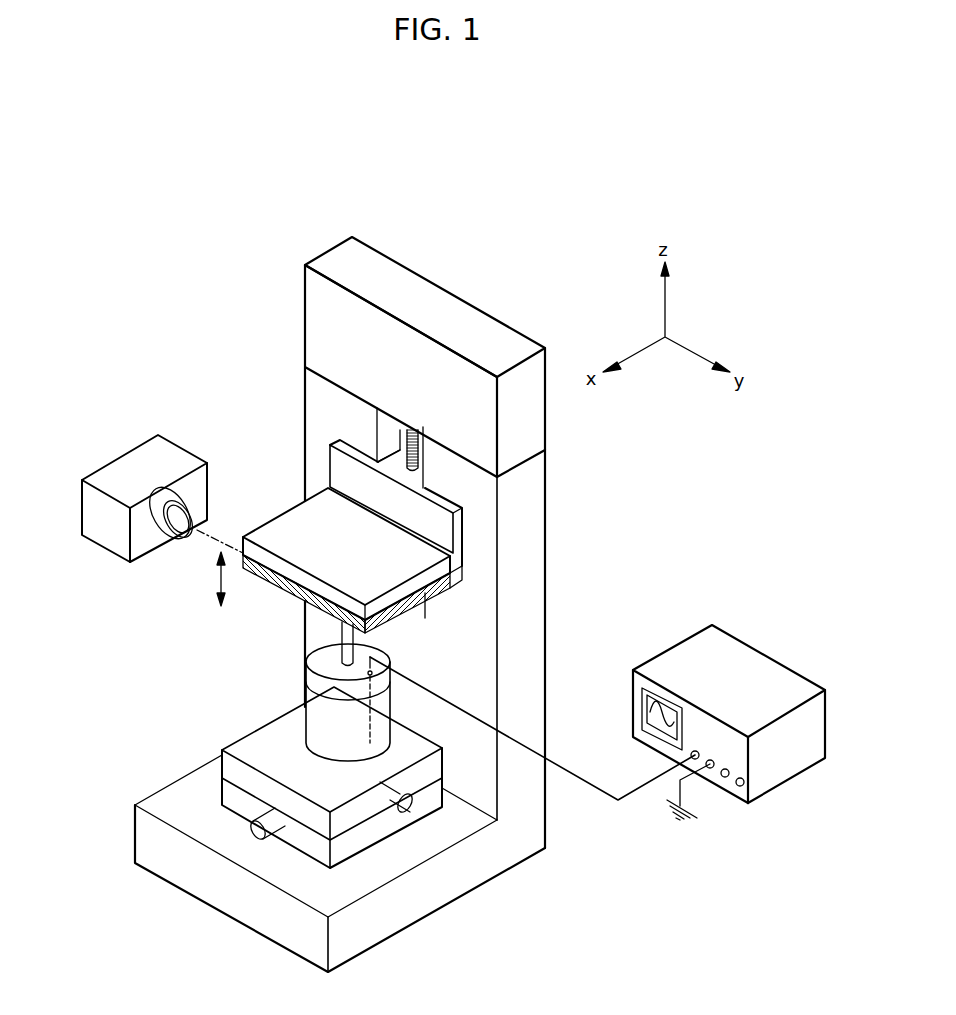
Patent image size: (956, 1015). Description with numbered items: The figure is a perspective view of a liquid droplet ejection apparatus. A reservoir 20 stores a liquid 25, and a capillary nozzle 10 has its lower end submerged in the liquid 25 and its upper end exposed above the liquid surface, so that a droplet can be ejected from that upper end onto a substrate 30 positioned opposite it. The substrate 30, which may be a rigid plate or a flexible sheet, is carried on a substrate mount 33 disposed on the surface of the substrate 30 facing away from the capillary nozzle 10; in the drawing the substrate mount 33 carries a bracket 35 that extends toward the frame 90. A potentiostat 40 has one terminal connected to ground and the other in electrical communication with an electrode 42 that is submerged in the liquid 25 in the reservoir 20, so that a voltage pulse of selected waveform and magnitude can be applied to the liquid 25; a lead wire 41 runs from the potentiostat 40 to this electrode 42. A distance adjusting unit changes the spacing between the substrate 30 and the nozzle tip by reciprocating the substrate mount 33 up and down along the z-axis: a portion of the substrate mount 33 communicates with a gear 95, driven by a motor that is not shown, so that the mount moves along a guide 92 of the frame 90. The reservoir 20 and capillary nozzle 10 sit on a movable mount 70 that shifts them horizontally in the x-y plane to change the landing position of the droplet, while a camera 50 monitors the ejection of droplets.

The capillary nozzle 10 is at (357, 651).
The reservoir 20 is at (305, 718).
The liquid 25 is at (334, 741).
The substrate 30 is at (312, 593).
The substrate mount 33 is at (285, 578).
The bracket 35 is at (397, 478).
The potentiostat 40 is at (750, 656).
The lead wire 41 is at (597, 790).
The electrode 42 is at (374, 718).
The camera 50 is at (130, 465).
The movable mount 70 is at (240, 773).
The frame 90 is at (538, 549).
The guide 92 is at (385, 432).
The gear 95 is at (427, 432).